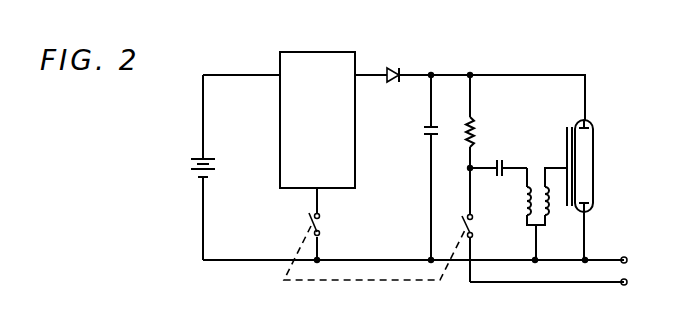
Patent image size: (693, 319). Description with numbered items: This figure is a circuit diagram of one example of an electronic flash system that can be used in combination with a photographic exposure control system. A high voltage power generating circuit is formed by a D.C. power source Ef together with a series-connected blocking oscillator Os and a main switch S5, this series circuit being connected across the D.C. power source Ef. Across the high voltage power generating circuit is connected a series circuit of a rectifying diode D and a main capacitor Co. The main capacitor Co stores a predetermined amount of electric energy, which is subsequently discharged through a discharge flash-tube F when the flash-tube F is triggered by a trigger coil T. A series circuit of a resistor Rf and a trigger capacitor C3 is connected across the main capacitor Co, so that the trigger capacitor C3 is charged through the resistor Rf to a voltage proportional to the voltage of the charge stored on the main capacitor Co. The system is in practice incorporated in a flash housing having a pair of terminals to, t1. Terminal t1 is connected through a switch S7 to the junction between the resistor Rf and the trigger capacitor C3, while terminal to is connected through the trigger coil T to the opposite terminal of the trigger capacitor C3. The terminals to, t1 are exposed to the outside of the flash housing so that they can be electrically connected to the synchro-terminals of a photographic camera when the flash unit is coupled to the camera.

The blocking oscillator Os is at (330, 52).
The rectifying diode D is at (393, 71).
The main capacitor Co is at (426, 133).
The resistor Rf is at (475, 130).
The trigger capacitor C3 is at (499, 160).
The trigger coil T is at (545, 184).
The discharge flash-tube F is at (596, 155).
The D.C. power source Ef is at (187, 163).
The main switch S5 is at (320, 225).
The switch S7 is at (472, 226).
The terminal to is at (643, 259).
The terminal t1 is at (643, 285).